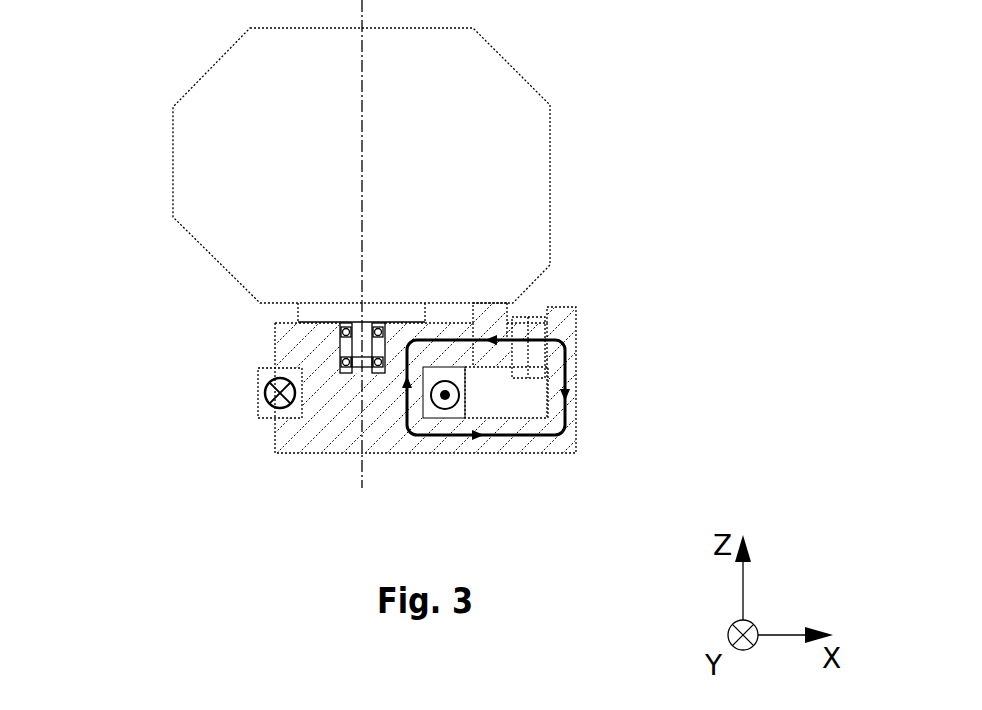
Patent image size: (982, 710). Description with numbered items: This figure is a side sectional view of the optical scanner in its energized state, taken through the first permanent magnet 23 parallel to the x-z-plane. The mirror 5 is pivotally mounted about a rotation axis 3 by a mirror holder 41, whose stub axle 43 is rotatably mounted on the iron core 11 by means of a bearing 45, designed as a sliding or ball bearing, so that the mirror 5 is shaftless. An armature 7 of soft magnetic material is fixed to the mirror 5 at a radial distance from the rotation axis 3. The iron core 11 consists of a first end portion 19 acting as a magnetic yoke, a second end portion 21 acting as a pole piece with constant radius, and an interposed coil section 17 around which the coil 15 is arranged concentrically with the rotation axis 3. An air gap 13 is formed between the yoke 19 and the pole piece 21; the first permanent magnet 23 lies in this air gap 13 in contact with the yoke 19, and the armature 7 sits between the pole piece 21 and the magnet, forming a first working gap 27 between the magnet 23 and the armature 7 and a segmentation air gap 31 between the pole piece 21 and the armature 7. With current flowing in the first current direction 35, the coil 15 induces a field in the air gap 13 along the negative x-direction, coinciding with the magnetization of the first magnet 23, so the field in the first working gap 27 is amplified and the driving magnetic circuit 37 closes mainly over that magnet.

The rotation axis 3 is at (431, 152).
The mirror 5 is at (592, 106).
The mirror holder 41 is at (503, 215).
The second end portion of the iron core 21 is at (607, 239).
The armature 7 is at (576, 255).
The first working gap 27 is at (609, 301).
The first permanent magnet 23 is at (621, 307).
The first end portion of the iron core 19 is at (555, 387).
The driving magnetic circuit 37 is at (636, 396).
The segmentation air gap 31 is at (565, 412).
The coil 15 is at (569, 448).
The air gap 13 is at (545, 388).
The iron core 11 is at (430, 447).
The stub axle 43 is at (365, 360).
The bearing 45 is at (215, 371).
The first current direction 35 is at (260, 399).
The coil section of the iron core 17 is at (315, 397).